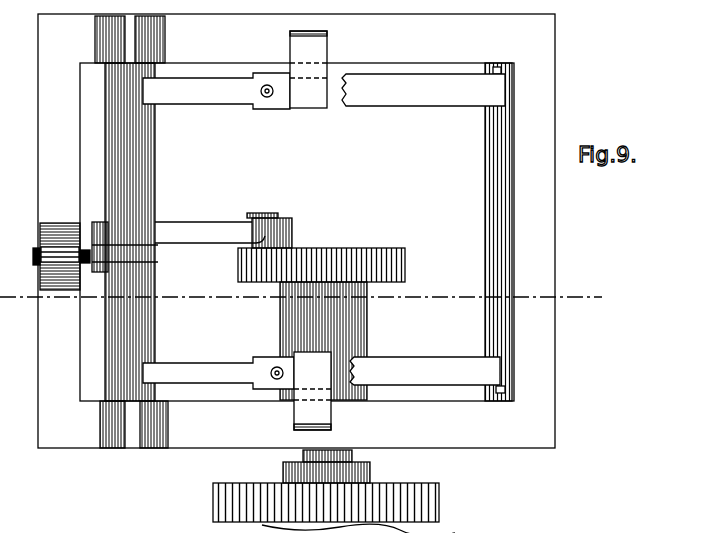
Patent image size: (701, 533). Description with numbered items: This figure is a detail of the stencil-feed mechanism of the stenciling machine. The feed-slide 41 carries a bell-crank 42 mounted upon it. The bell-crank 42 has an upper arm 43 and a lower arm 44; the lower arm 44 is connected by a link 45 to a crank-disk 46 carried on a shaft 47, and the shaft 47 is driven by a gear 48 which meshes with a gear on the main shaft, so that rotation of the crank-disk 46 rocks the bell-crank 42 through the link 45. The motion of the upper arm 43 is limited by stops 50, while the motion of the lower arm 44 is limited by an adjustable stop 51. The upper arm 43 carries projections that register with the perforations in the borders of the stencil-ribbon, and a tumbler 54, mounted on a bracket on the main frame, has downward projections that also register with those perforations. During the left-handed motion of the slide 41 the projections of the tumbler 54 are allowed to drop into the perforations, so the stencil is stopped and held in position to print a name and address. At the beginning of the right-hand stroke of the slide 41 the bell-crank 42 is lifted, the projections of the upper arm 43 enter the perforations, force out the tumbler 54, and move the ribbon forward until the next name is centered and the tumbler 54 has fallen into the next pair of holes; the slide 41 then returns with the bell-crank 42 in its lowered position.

The slide 41 is at (297, 228).
The bell-crank 42 is at (143, 165).
The upper arm 43 is at (203, 100).
The lower arm 44 is at (92, 272).
The link 45 is at (183, 227).
The crank-disk 46 is at (332, 262).
The shaft 47 is at (303, 456).
The gear 48 is at (374, 468).
The stops 50 is at (308, 102).
The adjustable stop 51 is at (36, 254).
The tumbler 54 is at (400, 98).